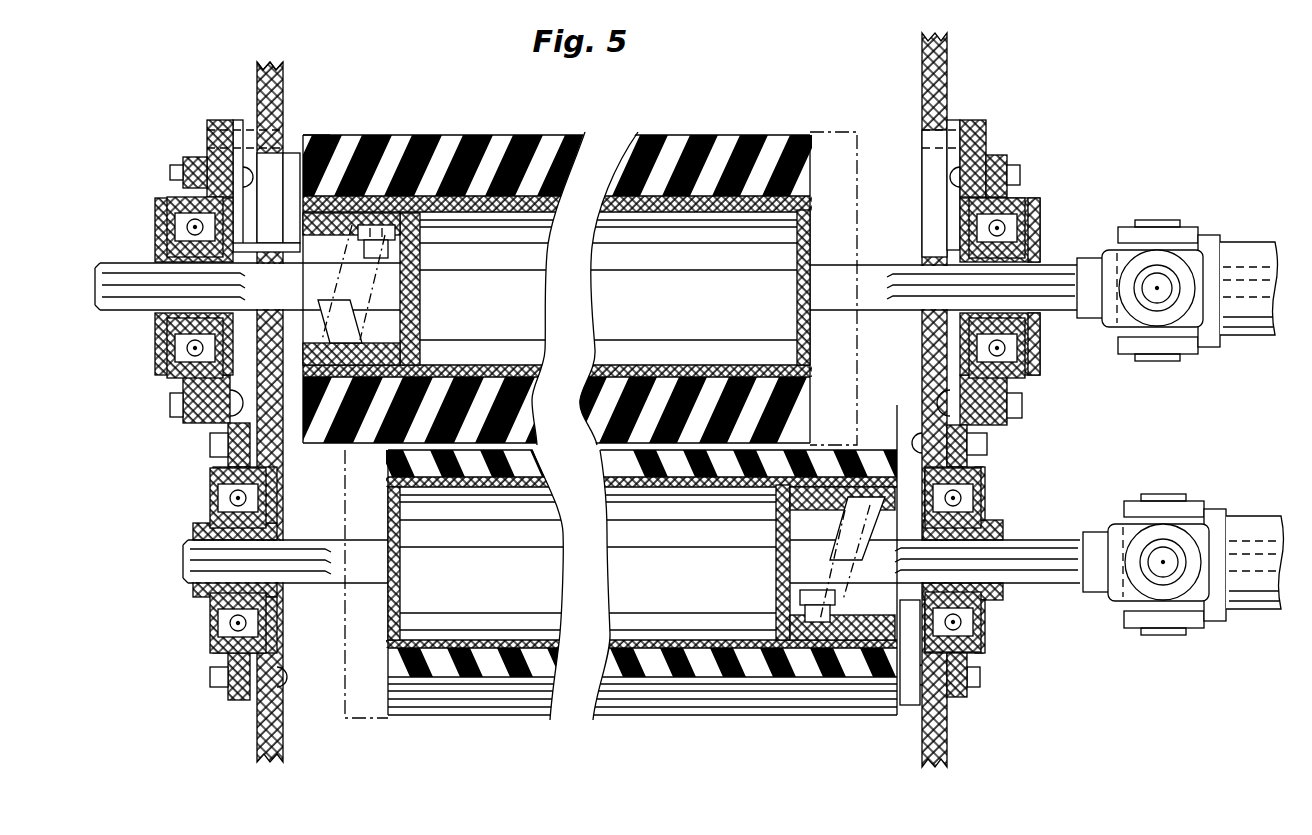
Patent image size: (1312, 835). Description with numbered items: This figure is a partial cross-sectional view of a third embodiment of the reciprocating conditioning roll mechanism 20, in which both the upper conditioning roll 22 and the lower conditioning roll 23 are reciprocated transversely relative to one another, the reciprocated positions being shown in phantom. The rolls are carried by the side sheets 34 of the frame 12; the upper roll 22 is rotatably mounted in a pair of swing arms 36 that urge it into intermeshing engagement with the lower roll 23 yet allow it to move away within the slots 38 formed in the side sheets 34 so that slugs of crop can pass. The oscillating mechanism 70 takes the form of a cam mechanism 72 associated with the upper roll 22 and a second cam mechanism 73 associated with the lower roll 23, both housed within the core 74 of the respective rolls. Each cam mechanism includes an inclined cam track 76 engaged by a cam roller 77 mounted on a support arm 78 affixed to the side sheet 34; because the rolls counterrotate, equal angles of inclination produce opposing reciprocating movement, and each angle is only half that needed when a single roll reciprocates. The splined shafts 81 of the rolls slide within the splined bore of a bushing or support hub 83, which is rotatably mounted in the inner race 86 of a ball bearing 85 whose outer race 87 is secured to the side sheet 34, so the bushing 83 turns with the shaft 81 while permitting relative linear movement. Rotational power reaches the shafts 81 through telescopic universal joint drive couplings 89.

The frame 12 is at (262, 68).
The reciprocating conditioning roll mechanism 20 is at (389, 72).
The upper conditioning roll 22 is at (402, 135).
The lower conditioning roll 23 is at (470, 718).
The side sheets 34 is at (285, 103).
The swing arms 36 is at (222, 122).
The slots 38 is at (272, 172).
The oscillating mechanism 70 is at (548, 297).
The cam mechanism 72 is at (410, 240).
The second cam mechanism 73 is at (800, 612).
The core 74 is at (551, 327).
The inclined cam track 76 is at (335, 337).
The cam roller 77 is at (380, 228).
The support arm 78 is at (340, 248).
The shafts 81 is at (915, 270).
The bushing or support hub 83 is at (165, 255).
The ball bearing 85 is at (195, 355).
The inner race 86 is at (1030, 210).
The outer race 87 is at (1030, 355).
The telescopic universal joint drive couplings 89 is at (1163, 235).